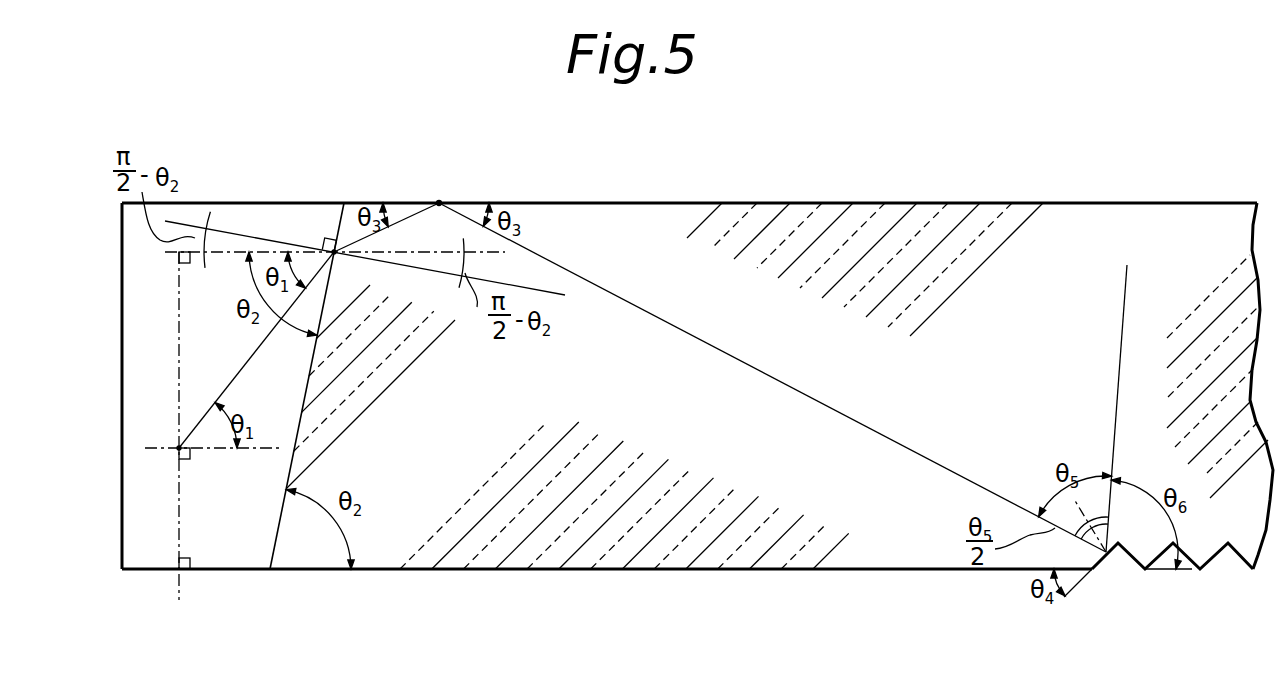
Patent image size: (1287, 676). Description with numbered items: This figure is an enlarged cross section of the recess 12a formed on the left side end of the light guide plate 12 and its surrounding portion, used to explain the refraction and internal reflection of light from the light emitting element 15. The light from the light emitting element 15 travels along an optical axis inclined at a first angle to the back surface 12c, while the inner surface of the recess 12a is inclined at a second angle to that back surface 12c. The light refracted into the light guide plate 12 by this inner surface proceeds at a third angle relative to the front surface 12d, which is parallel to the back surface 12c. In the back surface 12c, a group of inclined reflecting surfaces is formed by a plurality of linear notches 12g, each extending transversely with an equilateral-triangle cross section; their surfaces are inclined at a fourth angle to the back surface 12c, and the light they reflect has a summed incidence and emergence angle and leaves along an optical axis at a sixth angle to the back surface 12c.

The light guide plate 12 is at (951, 219).
The recess 12a is at (337, 226).
The back surface 12c is at (370, 571).
The front surface 12d is at (658, 203).
The linear notches 12g is at (1108, 574).
The light emitting element 15 is at (178, 449).